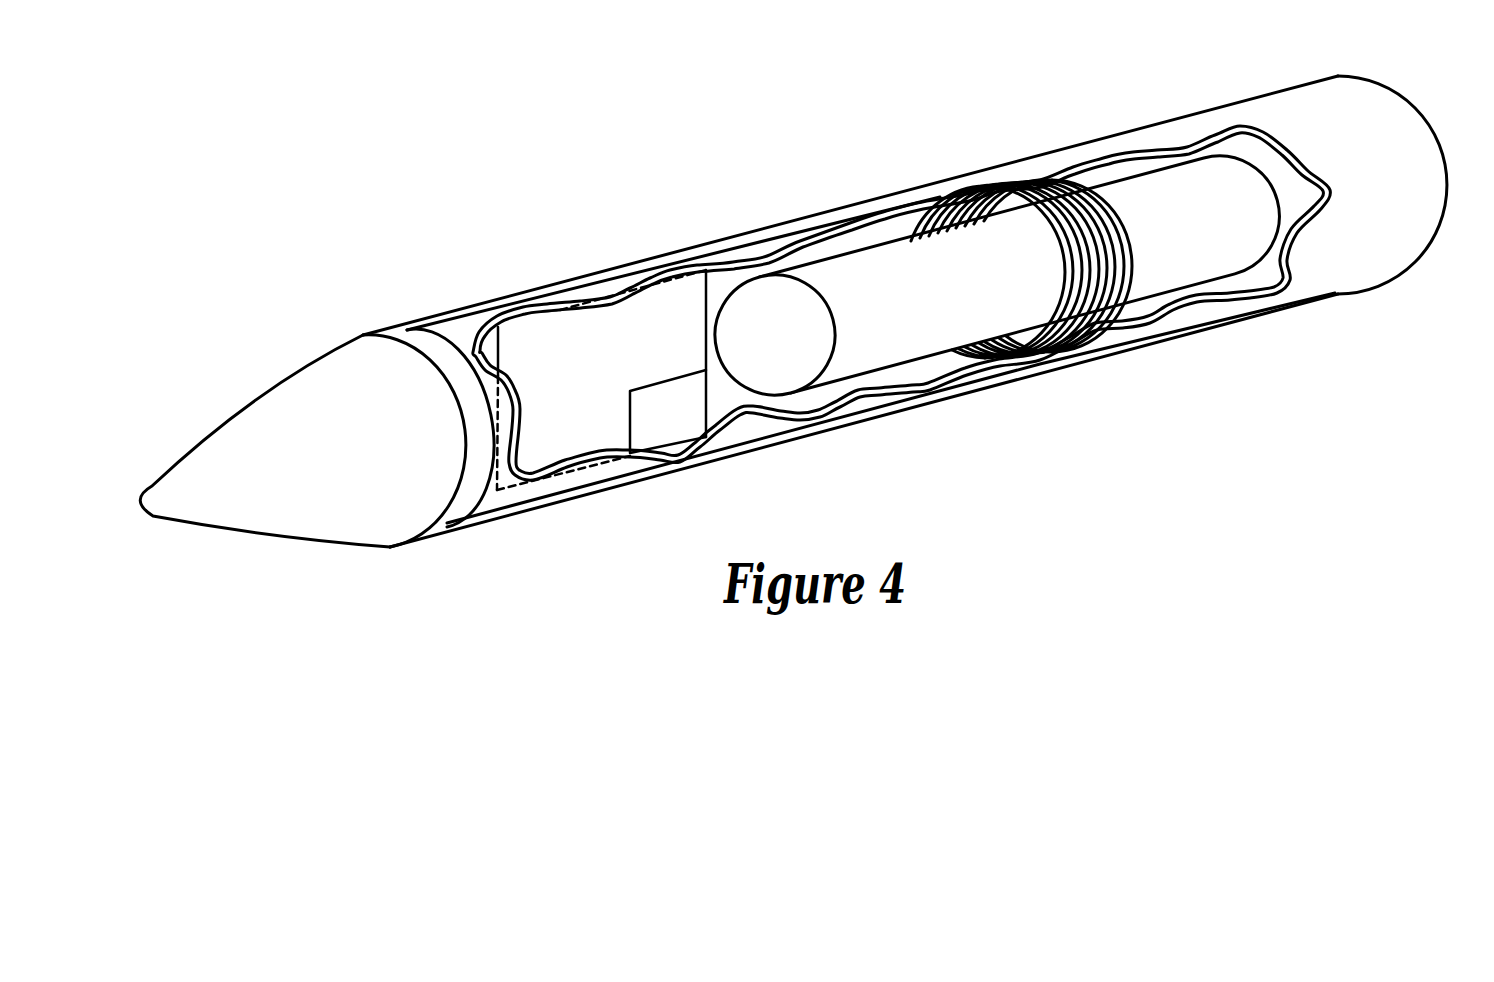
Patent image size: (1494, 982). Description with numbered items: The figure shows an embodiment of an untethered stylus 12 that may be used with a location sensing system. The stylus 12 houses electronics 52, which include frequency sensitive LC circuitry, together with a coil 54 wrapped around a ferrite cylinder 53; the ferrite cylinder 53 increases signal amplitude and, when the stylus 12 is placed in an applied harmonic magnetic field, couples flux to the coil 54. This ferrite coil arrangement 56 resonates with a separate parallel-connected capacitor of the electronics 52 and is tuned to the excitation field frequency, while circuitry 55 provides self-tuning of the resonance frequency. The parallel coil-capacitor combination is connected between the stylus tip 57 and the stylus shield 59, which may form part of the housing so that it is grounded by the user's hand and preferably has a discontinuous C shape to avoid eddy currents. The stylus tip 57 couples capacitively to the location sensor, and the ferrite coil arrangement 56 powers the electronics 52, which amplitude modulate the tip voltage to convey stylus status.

The untethered stylus 12 is at (352, 290).
The electronics 52 is at (599, 335).
The ferrite cylinder 53 is at (860, 263).
The coil 54 is at (1038, 210).
The circuitry 55 is at (688, 430).
The ferrite coil arrangement 56 is at (1100, 172).
The stylus tip 57 is at (230, 440).
The stylus shield 59 is at (468, 322).